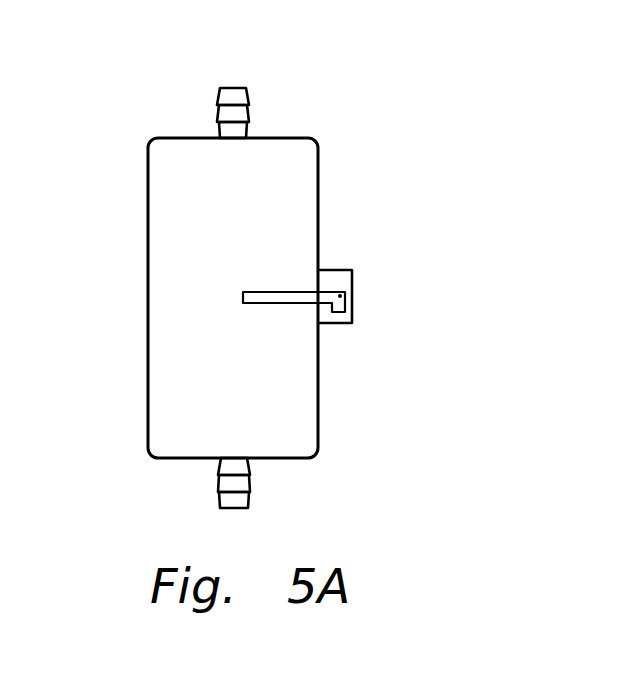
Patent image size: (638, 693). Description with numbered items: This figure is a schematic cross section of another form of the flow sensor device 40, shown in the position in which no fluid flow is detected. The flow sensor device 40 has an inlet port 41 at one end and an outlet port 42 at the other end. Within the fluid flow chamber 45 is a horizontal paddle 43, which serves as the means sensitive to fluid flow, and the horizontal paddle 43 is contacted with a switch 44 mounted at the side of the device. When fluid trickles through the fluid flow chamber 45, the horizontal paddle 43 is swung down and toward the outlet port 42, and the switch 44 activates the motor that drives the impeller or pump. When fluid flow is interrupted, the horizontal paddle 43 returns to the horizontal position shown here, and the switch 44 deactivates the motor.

The flow sensor device 40 is at (320, 222).
The inlet port 41 is at (250, 97).
The outlet port 42 is at (250, 485).
The horizontal paddle 43 is at (240, 297).
The switch 44 is at (345, 307).
The fluid flow chamber 45 is at (188, 373).